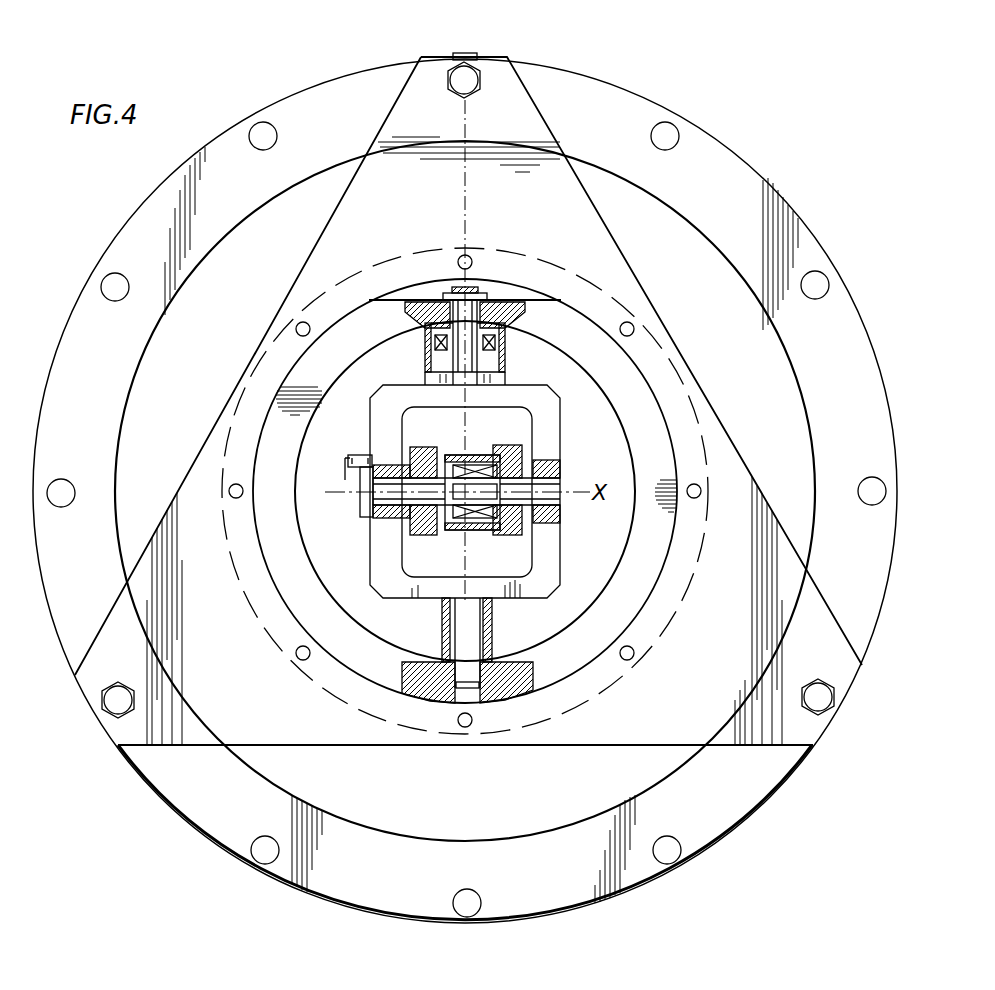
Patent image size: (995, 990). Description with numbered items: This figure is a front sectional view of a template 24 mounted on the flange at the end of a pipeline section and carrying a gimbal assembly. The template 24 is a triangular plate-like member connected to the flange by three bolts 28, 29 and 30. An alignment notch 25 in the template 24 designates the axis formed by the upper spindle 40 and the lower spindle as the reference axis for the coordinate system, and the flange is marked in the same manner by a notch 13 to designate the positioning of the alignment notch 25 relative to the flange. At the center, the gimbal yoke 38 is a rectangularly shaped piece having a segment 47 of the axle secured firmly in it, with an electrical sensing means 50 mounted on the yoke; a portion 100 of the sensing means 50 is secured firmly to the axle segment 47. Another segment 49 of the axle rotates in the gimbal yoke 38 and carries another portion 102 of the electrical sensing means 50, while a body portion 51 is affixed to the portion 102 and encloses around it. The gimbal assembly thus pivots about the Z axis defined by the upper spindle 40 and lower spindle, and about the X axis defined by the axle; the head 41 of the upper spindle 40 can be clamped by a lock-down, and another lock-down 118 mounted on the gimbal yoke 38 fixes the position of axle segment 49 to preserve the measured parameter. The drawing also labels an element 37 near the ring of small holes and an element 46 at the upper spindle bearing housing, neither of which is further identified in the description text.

The notch 13 is at (477, 54).
The template 24 is at (606, 257).
The alignment notch 25 is at (455, 56).
The bolt 28 is at (471, 88).
The bolt 29 is at (117, 703).
The bolt 30 is at (822, 703).
The bolt holes 37 is at (236, 499).
The gimbal yoke 38 is at (556, 418).
The upper spindle 40 is at (430, 301).
The head of upper spindle 41 is at (487, 299).
The bearing 46 is at (505, 349).
The axle segment 47 is at (556, 483).
The axle segment 49 is at (373, 511).
The electrical sensing means 50 is at (466, 520).
The body portion 51 is at (426, 447).
The portion of electrical sensing means 100 is at (480, 520).
The portion of electrical sensing means 102 is at (462, 464).
The lock-down 118 is at (360, 455).